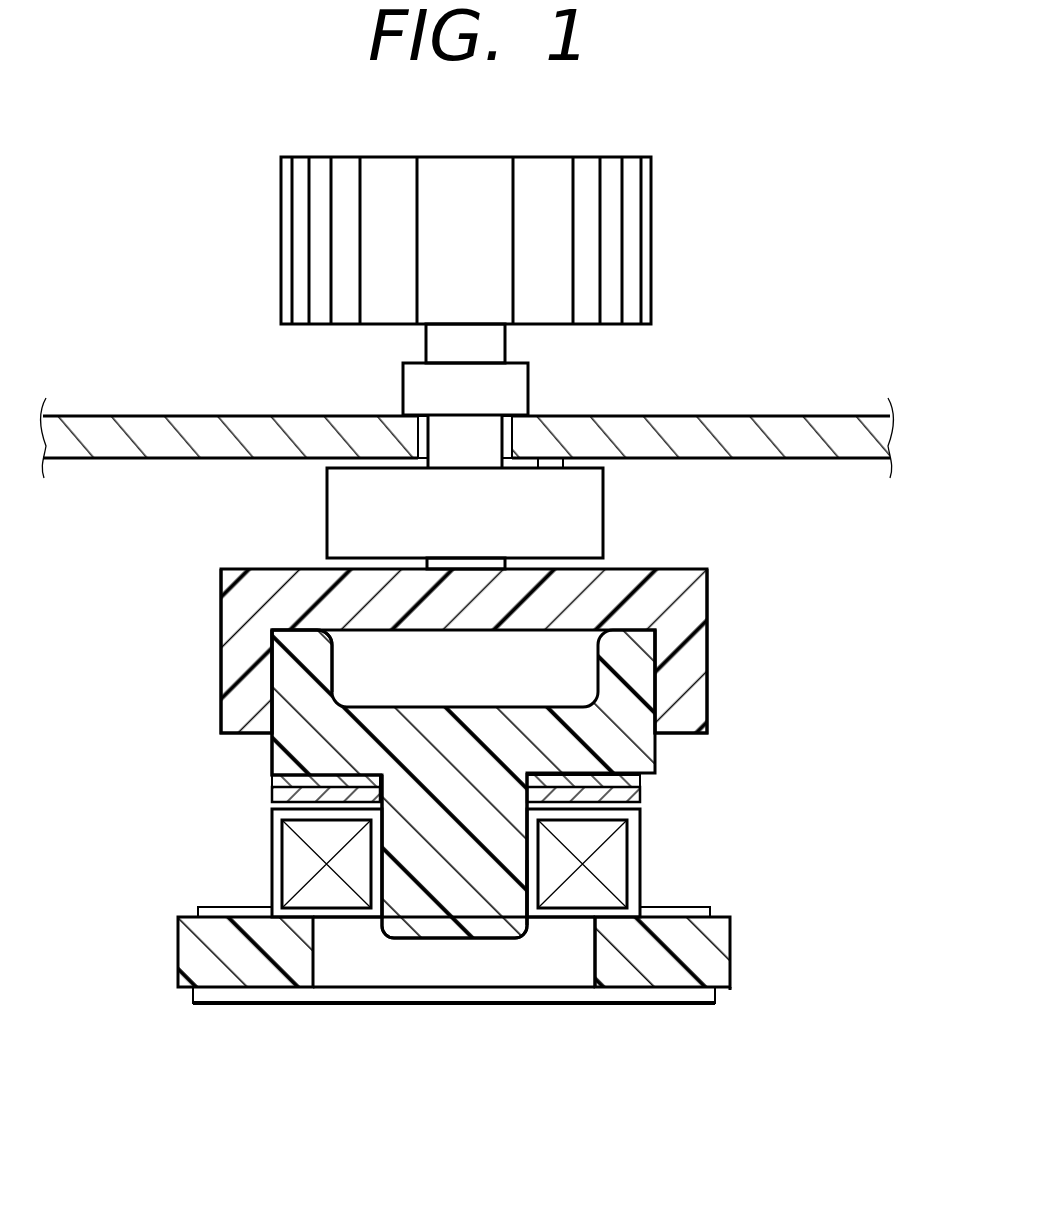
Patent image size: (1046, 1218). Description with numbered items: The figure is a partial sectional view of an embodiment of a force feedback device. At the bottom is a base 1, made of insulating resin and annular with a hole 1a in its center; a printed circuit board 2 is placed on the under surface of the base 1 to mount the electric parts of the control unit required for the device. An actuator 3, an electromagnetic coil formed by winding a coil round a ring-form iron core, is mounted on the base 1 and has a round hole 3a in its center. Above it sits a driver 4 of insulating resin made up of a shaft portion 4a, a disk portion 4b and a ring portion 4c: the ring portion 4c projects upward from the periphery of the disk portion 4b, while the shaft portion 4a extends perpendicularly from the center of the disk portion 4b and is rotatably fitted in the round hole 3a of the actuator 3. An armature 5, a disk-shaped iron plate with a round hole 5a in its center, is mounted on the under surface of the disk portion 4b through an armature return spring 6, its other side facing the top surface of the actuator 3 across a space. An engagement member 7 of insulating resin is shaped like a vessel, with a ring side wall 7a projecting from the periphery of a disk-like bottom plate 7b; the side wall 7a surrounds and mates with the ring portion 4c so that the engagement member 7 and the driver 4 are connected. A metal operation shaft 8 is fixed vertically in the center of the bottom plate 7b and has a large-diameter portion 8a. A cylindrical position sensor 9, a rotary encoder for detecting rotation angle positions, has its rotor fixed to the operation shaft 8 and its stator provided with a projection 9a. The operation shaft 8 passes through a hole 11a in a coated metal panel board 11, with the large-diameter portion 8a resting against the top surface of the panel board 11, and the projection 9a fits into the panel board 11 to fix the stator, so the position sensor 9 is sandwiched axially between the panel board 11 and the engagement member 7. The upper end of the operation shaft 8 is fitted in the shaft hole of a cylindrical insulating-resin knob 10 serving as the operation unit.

The base 1 is at (688, 940).
The hole 1a is at (595, 955).
The printed circuit board 2 is at (643, 995).
The actuator 3 is at (598, 860).
The round hole 3a is at (517, 875).
The driver 4 is at (353, 720).
The shaft portion 4a is at (413, 878).
The disk portion 4b is at (288, 752).
The ring portion 4c is at (290, 645).
The armature 5 is at (643, 797).
The round hole 5a is at (387, 830).
The armature return spring 6 is at (643, 779).
The engagement member 7 is at (665, 593).
The ring side wall 7a is at (665, 657).
The bottom plate 7b is at (255, 582).
The operation shaft 8 is at (487, 438).
The large-diameter portion 8a is at (500, 384).
The position sensor 9 is at (565, 540).
The projection 9a is at (562, 470).
The knob 10 is at (612, 201).
The panel board 11 is at (143, 415).
The hole 11a is at (432, 440).